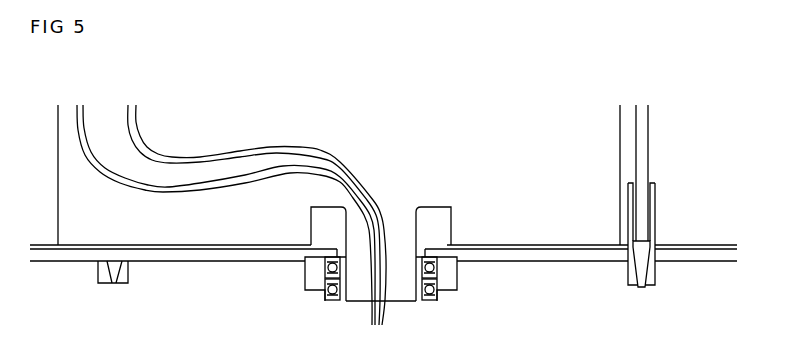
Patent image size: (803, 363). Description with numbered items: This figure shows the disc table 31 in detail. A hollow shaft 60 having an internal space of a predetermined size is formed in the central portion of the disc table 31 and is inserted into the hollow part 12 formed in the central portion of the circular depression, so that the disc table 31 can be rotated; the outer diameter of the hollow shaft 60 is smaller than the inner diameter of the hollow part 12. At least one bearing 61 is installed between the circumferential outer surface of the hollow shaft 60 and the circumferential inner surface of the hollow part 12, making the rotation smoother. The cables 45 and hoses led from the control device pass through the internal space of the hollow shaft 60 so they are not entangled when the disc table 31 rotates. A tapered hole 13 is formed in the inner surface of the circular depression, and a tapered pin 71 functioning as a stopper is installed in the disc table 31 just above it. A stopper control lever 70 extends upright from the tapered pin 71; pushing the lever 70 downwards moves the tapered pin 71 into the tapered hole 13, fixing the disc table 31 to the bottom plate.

The cables 45 is at (262, 148).
The disc table 31 is at (545, 244).
The tapered hole 13 is at (128, 282).
The hollow part 12 is at (447, 280).
The hollow shaft 60 is at (417, 272).
The bearing 61 is at (335, 300).
The stopper control lever 70 is at (636, 137).
The tapered pin 71 is at (641, 268).